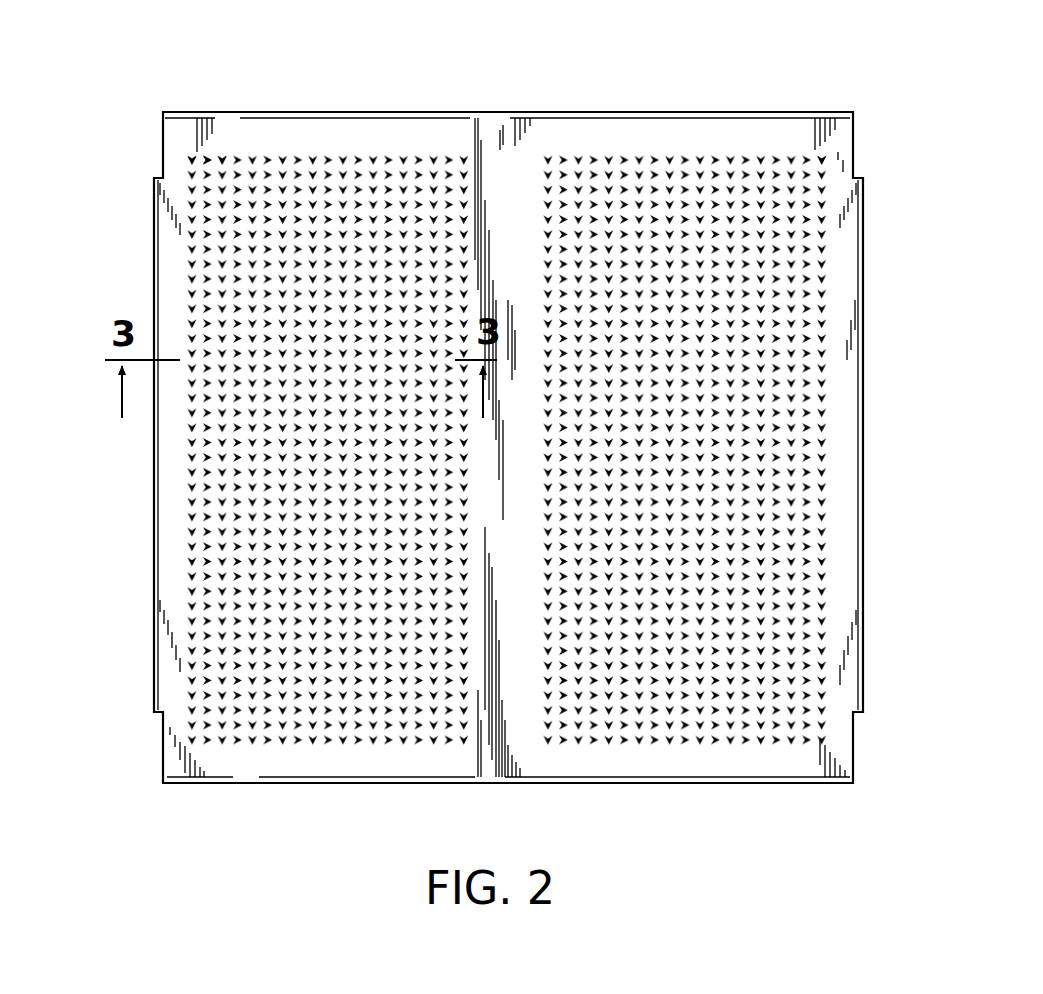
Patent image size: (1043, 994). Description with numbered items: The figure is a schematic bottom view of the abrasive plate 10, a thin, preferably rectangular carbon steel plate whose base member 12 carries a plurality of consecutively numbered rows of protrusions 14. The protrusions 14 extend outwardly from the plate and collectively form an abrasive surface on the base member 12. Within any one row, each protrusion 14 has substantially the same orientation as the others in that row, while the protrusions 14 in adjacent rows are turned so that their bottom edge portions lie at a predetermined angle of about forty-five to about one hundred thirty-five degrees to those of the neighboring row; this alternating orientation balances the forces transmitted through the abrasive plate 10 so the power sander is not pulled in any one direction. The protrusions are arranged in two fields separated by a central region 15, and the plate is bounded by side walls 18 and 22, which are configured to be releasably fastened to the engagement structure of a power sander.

The abrasive plate 10 is at (940, 156).
The base member 12 is at (815, 130).
The protrusions 14 is at (343, 158).
The central rib 15 is at (497, 165).
The side wall 18 is at (863, 590).
The side wall 22 is at (153, 568).